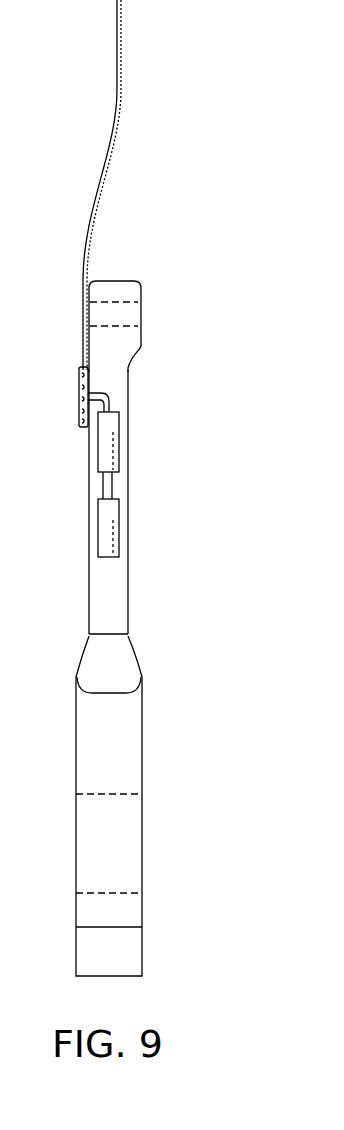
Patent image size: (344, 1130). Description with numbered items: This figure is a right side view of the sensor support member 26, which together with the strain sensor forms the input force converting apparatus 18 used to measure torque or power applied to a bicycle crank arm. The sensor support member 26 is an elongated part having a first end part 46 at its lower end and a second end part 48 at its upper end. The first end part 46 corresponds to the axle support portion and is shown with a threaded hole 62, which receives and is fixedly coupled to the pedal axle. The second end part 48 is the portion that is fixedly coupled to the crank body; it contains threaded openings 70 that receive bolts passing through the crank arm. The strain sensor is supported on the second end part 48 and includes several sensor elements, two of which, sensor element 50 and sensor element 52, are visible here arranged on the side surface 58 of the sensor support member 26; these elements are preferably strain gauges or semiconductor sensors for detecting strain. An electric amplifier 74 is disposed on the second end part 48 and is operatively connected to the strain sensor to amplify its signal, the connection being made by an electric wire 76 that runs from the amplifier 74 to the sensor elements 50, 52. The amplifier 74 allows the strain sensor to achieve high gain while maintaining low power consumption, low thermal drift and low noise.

The input force converting apparatus 18 is at (157, 228).
The sensor support member 26 is at (113, 597).
The first end part 46 is at (142, 951).
The second end part 48 is at (131, 357).
The sensor element 50 is at (106, 515).
The sensor element 52 is at (108, 425).
The side surface 58 is at (103, 616).
The threaded hole 62 is at (117, 796).
The threaded opening 70 is at (139, 309).
The electric amplifier 74 is at (78, 383).
The electric wire 76 is at (117, 40).